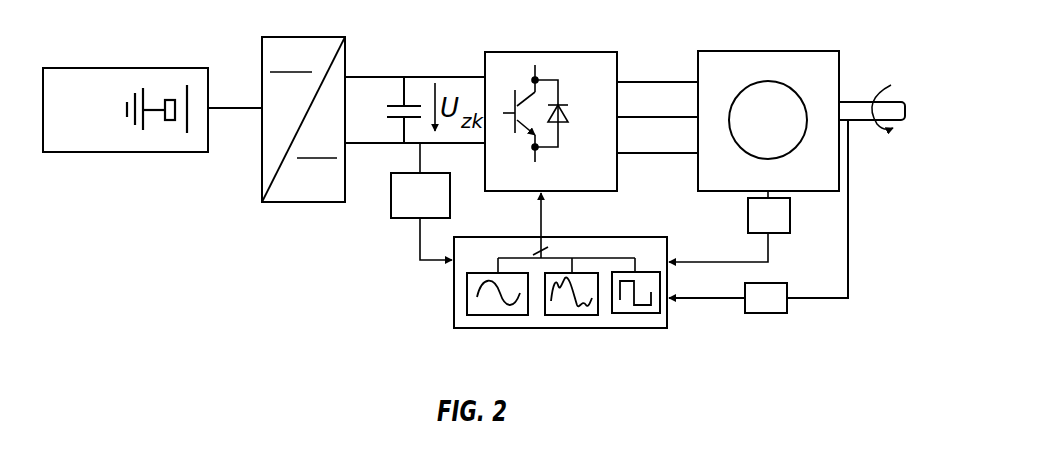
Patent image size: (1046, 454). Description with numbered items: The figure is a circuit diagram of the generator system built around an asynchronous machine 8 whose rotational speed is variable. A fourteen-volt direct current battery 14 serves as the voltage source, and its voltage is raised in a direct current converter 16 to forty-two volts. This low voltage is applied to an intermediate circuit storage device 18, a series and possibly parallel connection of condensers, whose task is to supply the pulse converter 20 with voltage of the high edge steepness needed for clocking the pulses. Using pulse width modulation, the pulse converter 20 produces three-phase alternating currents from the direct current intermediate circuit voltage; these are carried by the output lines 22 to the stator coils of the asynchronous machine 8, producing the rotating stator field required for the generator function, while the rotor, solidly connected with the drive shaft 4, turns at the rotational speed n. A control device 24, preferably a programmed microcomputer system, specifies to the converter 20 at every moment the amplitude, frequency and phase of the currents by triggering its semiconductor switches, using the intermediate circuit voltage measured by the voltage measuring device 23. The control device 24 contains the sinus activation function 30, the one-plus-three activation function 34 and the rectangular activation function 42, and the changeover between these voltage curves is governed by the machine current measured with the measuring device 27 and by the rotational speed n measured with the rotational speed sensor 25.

The direct current battery 14 is at (127, 77).
The direct current converter 16 is at (323, 43).
The intermediate circuit storage device 18 is at (405, 71).
The pulse converter 20 is at (573, 60).
The three-phase output lines u, v, w 22 is at (664, 48).
The asynchronous machine 8 is at (797, 58).
The drive shaft 4 is at (854, 124).
The voltage measuring device 23 is at (391, 205).
The control device 24 is at (560, 284).
The rotational speed sensor 25 is at (765, 315).
The measuring device 27 is at (748, 212).
The sinus activation function 30 is at (488, 316).
The 1+3-activation function 34 is at (560, 316).
The rectangular activation function 42 is at (627, 305).